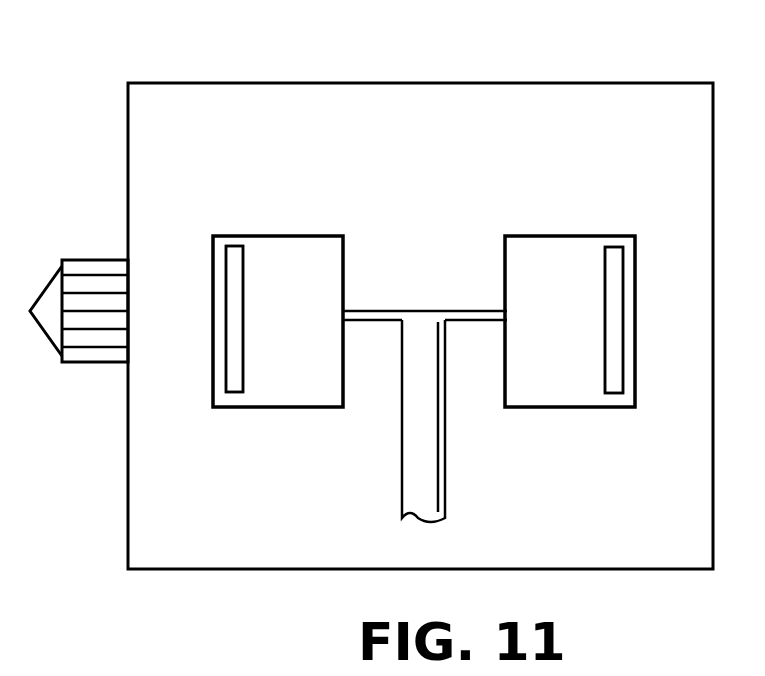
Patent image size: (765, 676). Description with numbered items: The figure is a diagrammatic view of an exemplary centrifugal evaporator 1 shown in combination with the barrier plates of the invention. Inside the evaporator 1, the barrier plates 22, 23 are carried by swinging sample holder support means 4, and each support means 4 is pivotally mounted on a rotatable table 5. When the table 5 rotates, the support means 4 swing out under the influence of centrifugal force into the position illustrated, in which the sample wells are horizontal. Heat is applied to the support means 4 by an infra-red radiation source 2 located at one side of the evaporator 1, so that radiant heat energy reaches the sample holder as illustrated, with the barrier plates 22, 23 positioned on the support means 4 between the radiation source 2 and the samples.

The centrifugal evaporator 1 is at (134, 56).
The infra-red radiation source 2 is at (49, 262).
The swinging sample holder support means 4 is at (297, 236).
The rotatable table 5 is at (424, 302).
The barrier plate 22 is at (222, 265).
The barrier plate 23 is at (424, 319).